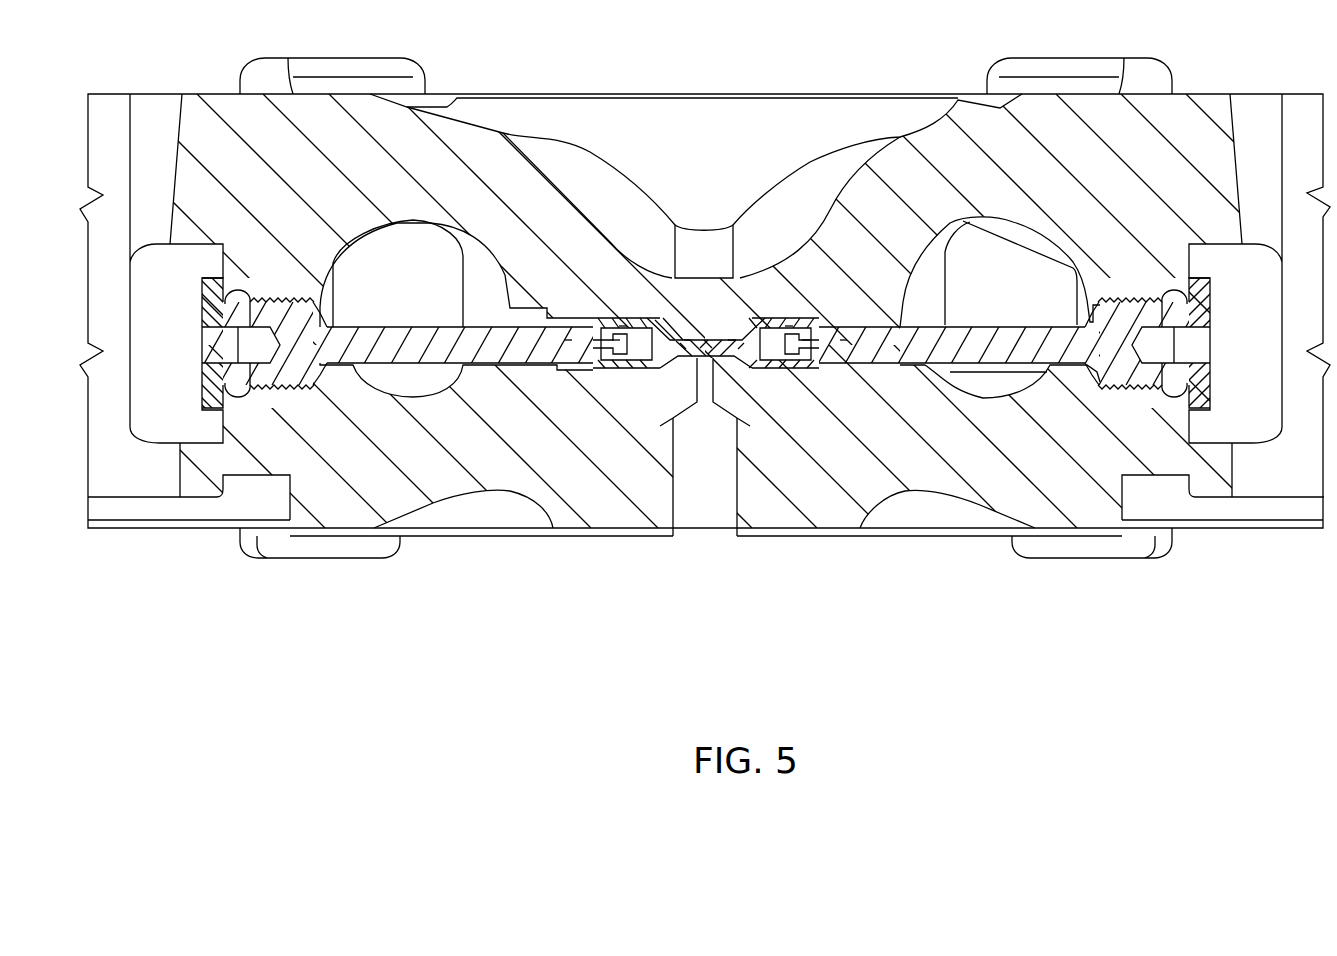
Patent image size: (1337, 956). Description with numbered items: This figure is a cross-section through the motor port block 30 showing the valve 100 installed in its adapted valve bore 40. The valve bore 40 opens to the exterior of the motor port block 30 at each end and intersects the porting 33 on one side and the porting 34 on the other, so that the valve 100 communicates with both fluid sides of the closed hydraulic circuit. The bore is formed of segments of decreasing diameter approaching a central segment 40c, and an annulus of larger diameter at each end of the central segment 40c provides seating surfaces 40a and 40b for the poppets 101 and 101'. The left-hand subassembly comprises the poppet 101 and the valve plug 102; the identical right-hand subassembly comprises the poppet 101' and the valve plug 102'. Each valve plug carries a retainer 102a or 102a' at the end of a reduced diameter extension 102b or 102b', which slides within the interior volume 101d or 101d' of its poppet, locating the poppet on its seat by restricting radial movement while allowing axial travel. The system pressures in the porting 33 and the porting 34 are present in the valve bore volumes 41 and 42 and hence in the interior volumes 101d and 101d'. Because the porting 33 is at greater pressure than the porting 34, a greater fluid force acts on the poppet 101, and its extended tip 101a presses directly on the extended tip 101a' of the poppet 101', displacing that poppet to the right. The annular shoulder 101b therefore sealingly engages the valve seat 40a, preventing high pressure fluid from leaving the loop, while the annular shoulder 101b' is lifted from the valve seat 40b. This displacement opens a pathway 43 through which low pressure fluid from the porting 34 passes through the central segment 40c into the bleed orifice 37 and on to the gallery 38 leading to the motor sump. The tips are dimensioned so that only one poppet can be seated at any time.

The motor port block 30 is at (1208, 93).
The porting 33 is at (487, 237).
The porting 34 is at (1000, 220).
The bleed orifice 37 is at (707, 392).
The gallery 38 is at (718, 510).
The valve bore 40 is at (337, 372).
The seating surface 40a is at (660, 358).
The seating surface 40b is at (757, 380).
The central segment 40c is at (713, 338).
The valve bore volume 41 is at (578, 368).
The valve bore volume 42 is at (840, 362).
The pathway 43 is at (773, 360).
The valve 100 is at (190, 335).
The poppet 101 is at (656, 409).
The poppet 101' is at (762, 416).
The extended tip 101a is at (683, 264).
The extended tip 101a' is at (723, 248).
The annular shoulder 101b is at (653, 291).
The annular shoulder 101b' is at (761, 291).
The interior volume 101d is at (618, 268).
The interior volume 101d' is at (788, 271).
The valve plug 102 is at (477, 339).
The valve plug 102' is at (976, 338).
The retainer 102a is at (580, 281).
The retainer 102a' is at (841, 281).
The extension 102b is at (541, 299).
The extension 102b' is at (870, 296).